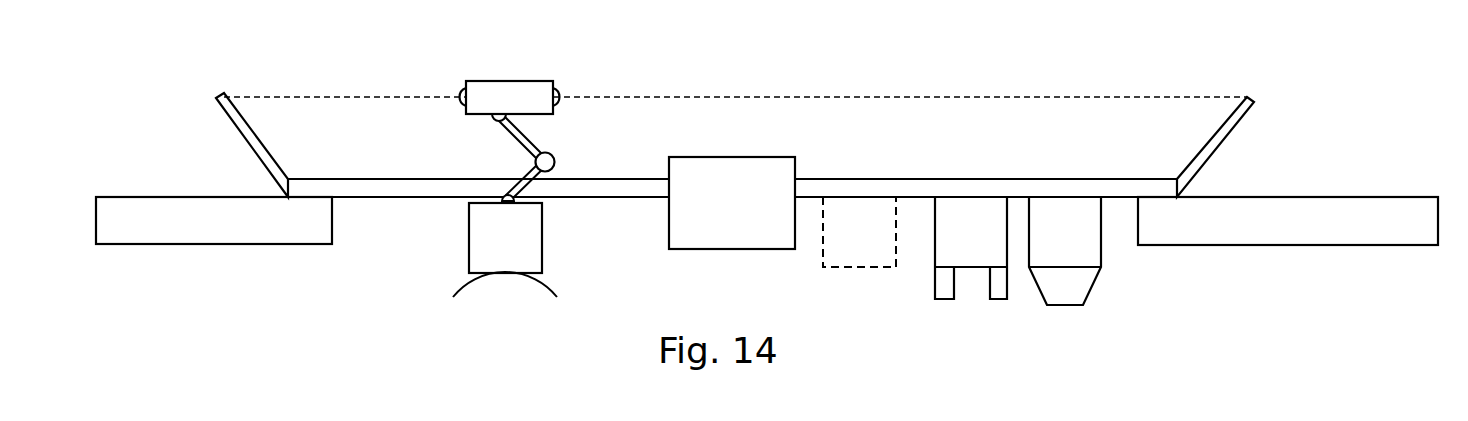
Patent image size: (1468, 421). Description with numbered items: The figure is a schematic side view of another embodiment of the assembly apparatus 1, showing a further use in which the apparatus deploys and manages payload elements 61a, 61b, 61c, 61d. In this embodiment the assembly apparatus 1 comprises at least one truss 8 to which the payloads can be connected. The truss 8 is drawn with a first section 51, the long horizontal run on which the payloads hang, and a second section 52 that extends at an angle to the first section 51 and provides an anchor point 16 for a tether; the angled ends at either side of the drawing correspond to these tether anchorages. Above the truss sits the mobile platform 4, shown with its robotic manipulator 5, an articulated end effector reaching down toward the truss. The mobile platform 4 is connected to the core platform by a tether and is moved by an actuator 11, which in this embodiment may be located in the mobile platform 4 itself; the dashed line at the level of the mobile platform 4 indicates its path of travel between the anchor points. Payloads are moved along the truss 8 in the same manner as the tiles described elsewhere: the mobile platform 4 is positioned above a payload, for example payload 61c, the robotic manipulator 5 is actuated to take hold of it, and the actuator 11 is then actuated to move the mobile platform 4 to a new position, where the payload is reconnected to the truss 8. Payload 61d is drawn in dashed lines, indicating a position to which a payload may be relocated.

The assembly apparatus 1 is at (1128, 55).
The mobile platform 4 is at (518, 92).
The robotic manipulator 5 is at (540, 151).
The truss 8 is at (358, 193).
The actuator 11 is at (564, 92).
The anchor point 16 is at (1248, 100).
The first section 51 is at (609, 191).
The second section 52 is at (247, 135).
The payload element 61a is at (1075, 289).
The payload element 61b is at (944, 287).
The payload element 61c is at (502, 265).
The payload element 61d is at (835, 257).